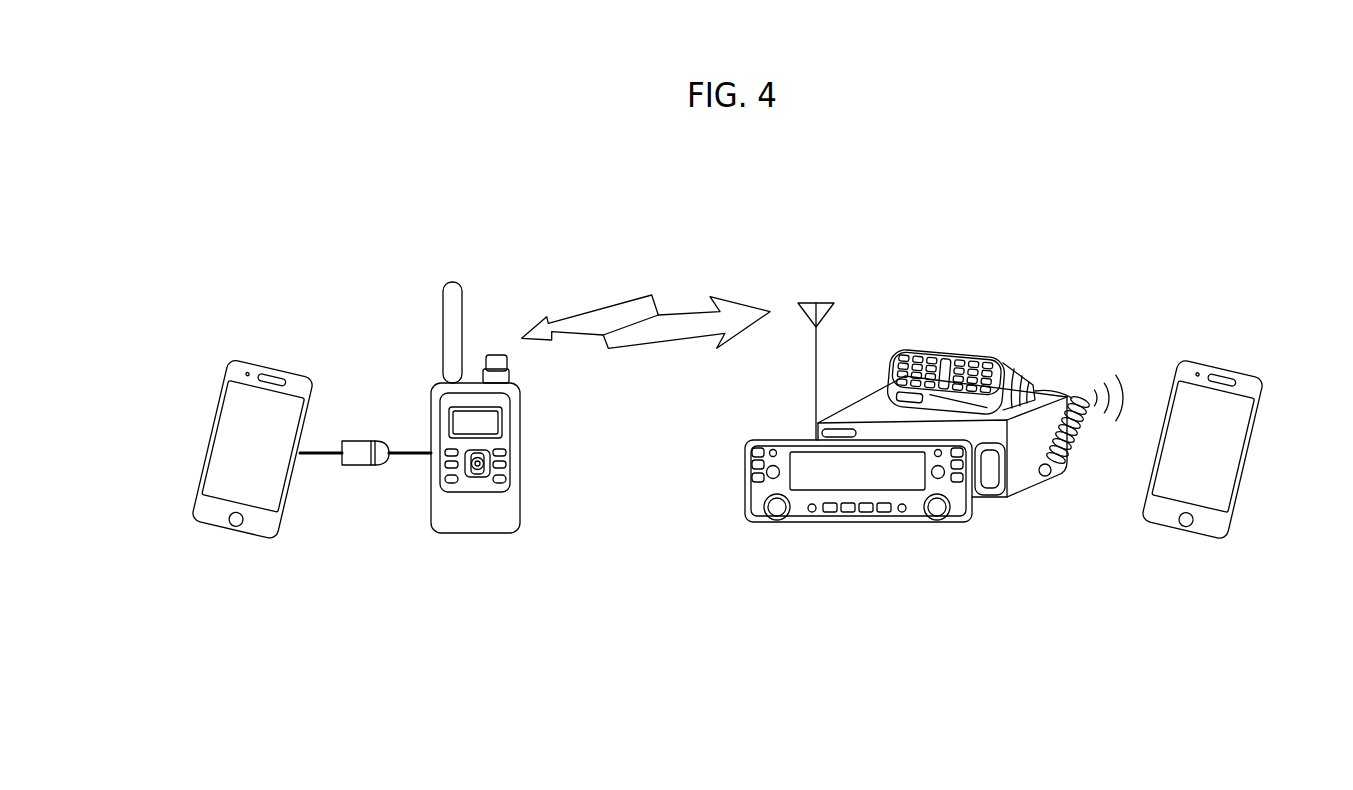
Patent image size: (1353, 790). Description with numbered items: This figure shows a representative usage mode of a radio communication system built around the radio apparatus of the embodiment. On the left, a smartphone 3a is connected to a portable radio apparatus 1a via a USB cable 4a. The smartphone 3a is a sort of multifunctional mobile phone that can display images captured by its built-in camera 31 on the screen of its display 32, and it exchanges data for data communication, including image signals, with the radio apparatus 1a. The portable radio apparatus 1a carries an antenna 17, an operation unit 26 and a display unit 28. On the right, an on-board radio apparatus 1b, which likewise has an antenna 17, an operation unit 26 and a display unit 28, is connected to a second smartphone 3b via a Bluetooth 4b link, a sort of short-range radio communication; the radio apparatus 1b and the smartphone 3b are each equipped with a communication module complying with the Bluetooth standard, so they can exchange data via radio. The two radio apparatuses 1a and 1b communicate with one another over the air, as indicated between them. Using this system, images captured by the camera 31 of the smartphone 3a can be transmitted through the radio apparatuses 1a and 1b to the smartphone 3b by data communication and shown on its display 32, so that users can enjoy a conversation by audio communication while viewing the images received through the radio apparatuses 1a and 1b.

The portable radio apparatus 1a is at (472, 535).
The on-board radio apparatus 1b is at (929, 524).
The antenna 17 is at (463, 293).
The operation unit 26 is at (483, 486).
The display unit 28 is at (498, 435).
The smartphone 3a is at (212, 533).
The smartphone 3b is at (1160, 530).
The built-in camera 31 is at (243, 533).
The display 32 is at (233, 449).
The USB cable 4a is at (358, 468).
The Bluetooth 4b is at (1118, 378).